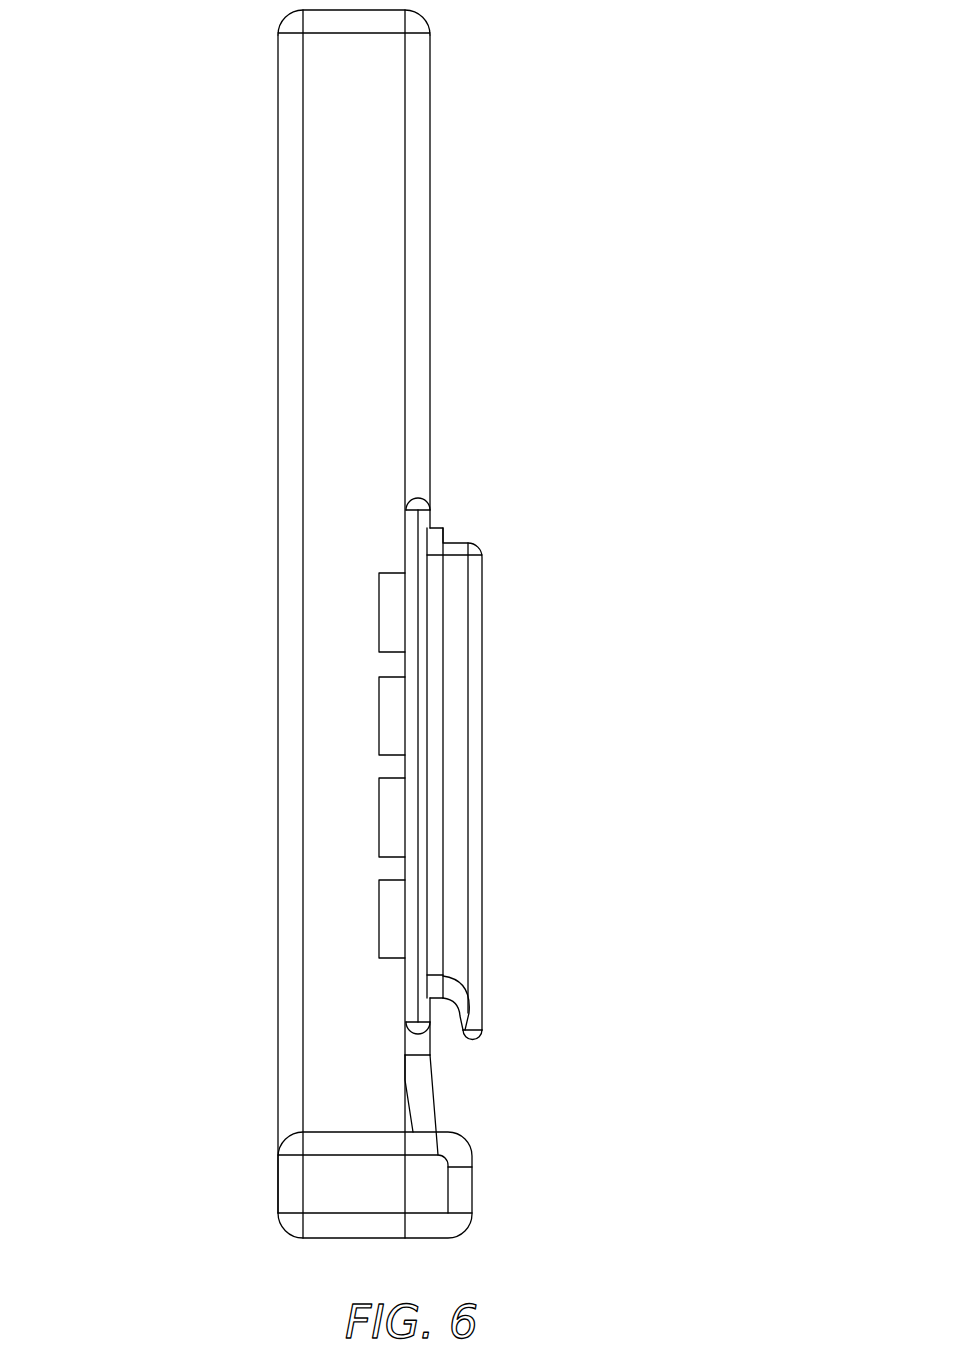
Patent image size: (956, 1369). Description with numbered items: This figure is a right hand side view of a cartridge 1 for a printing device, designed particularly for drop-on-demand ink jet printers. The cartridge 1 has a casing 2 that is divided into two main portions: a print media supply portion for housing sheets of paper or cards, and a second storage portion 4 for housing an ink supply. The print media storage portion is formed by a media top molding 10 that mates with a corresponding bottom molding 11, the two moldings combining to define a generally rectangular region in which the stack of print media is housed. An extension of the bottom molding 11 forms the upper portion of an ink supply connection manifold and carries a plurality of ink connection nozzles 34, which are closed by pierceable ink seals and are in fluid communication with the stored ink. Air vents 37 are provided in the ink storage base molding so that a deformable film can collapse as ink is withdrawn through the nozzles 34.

The cartridge 1 is at (443, 624).
The casing 2 is at (272, 1032).
The second storage portion 4 is at (507, 1000).
The media top molding 10 is at (328, 115).
The bottom molding 11 is at (418, 133).
The ink connection nozzles 34 is at (395, 612).
The air vents 37 is at (550, 784).